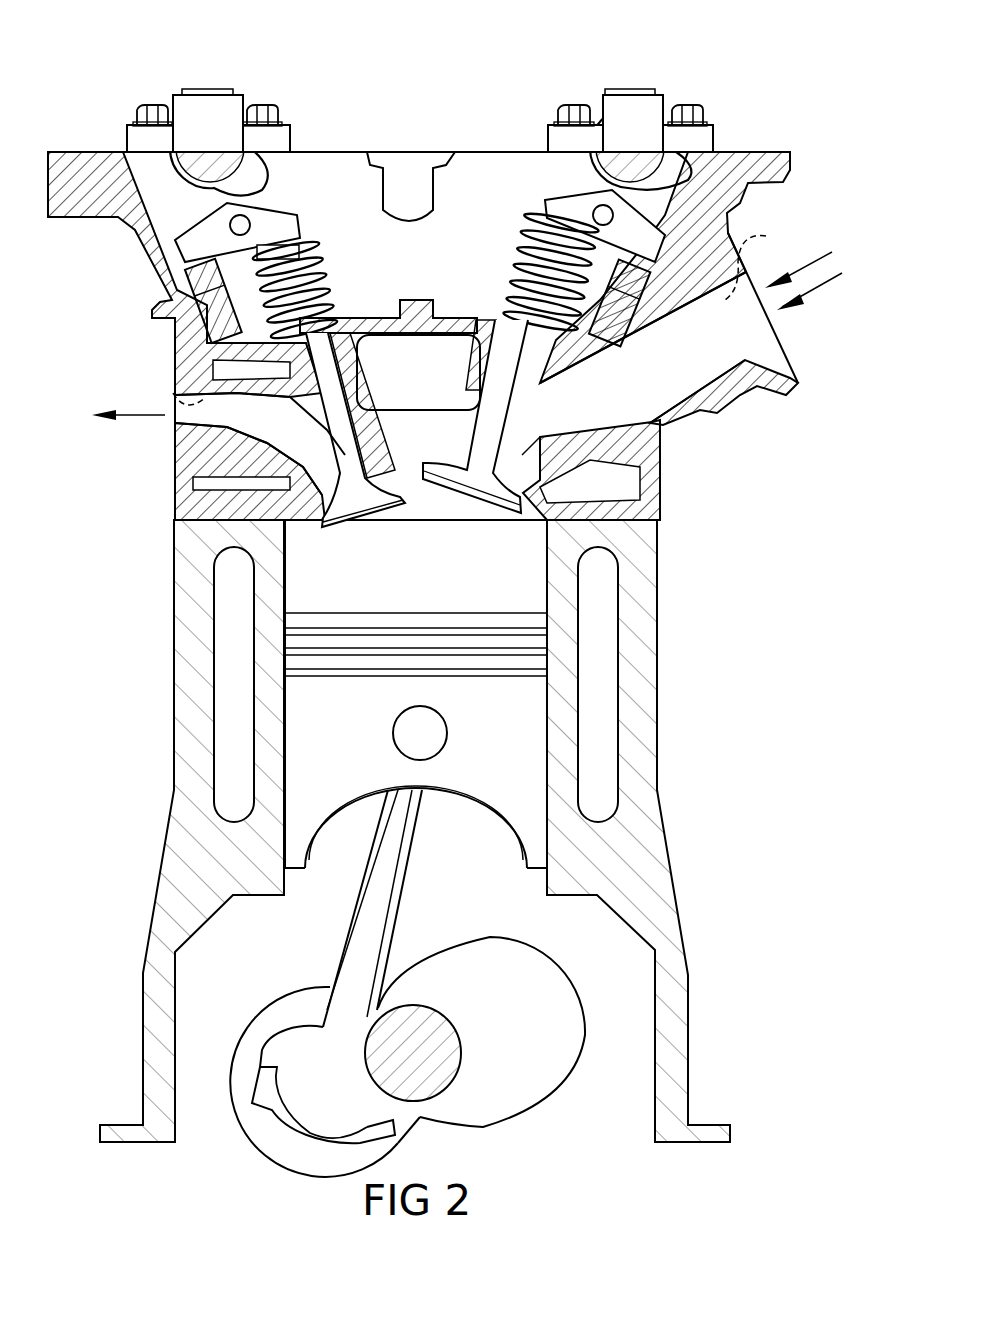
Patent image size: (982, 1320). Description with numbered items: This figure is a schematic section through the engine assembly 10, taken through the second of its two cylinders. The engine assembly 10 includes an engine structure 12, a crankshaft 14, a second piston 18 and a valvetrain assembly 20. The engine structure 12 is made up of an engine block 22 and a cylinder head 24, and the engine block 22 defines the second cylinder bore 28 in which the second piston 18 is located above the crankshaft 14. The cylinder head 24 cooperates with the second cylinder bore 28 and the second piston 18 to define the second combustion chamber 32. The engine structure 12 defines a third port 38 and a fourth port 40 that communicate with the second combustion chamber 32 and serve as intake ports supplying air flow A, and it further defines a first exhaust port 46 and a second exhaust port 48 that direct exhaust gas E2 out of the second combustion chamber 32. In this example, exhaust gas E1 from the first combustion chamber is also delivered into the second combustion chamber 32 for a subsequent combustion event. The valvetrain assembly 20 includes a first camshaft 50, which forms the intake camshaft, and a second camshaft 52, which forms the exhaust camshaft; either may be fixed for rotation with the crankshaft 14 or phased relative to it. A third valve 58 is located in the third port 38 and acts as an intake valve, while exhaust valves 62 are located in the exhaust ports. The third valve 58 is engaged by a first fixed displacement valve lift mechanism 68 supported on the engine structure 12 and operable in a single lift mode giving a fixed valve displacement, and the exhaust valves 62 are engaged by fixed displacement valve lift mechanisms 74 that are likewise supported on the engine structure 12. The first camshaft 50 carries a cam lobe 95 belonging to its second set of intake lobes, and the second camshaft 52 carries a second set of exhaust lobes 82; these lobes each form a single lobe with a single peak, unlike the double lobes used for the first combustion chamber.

The engine assembly 10 is at (78, 64).
The engine structure 12 is at (165, 525).
The crankshaft 14 is at (525, 1118).
The second piston 18 is at (549, 723).
The valvetrain assembly 20 is at (720, 75).
The engine block 22 is at (658, 766).
The cylinder head 24 is at (152, 305).
The second cylinder bore 28 is at (284, 575).
The second combustion chamber 32 is at (432, 586).
The third port 38 is at (768, 328).
The fourth port 40 is at (761, 261).
The first exhaust port 46 is at (175, 433).
The second exhaust port 48 is at (160, 386).
The first camshaft 50 is at (590, 100).
The second camshaft 52 is at (155, 92).
The third valve 58 is at (470, 514).
The exhaust valves 62 is at (345, 522).
The first fixed displacement valve lift mechanism 68 is at (547, 200).
The fixed displacement valve lift mechanisms 74 is at (297, 203).
The second set of exhaust lobes 82 is at (250, 98).
The cam lobe 95 is at (655, 95).
The air flow A is at (798, 266).
The exhaust gas E1 is at (809, 295).
The exhaust gas E2 is at (128, 430).